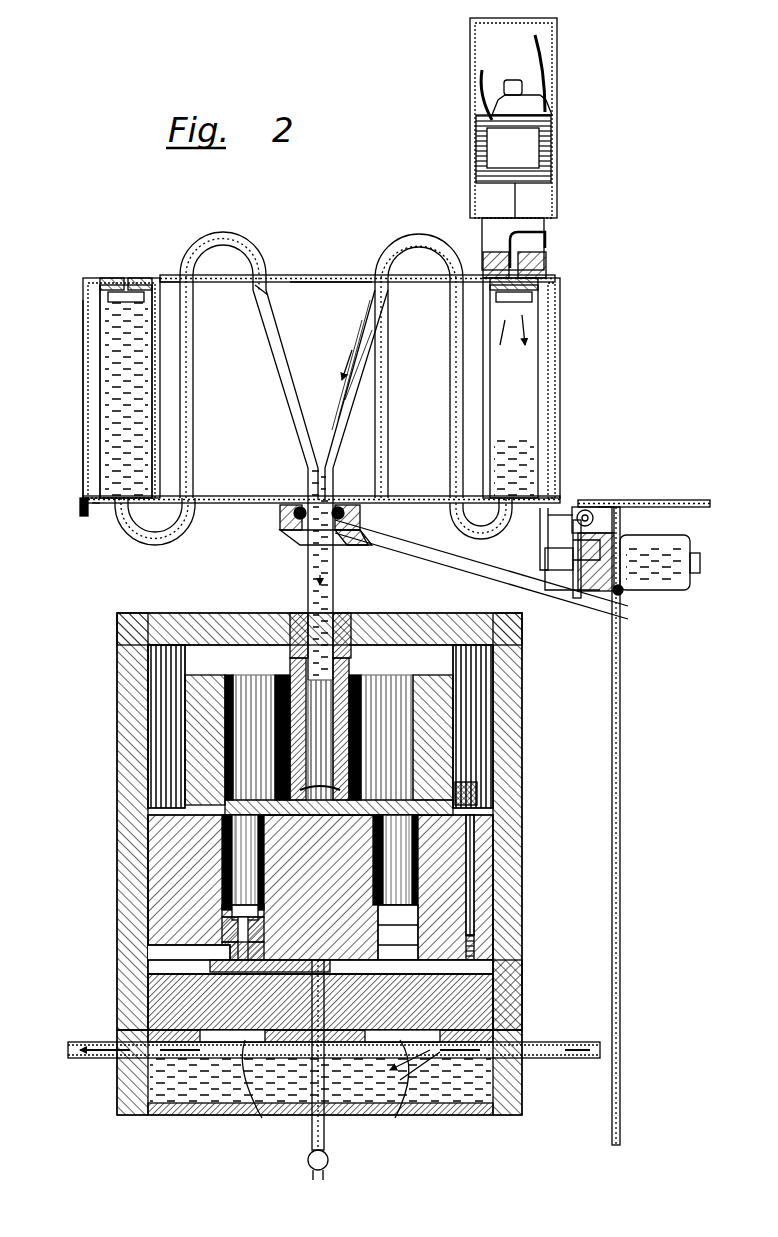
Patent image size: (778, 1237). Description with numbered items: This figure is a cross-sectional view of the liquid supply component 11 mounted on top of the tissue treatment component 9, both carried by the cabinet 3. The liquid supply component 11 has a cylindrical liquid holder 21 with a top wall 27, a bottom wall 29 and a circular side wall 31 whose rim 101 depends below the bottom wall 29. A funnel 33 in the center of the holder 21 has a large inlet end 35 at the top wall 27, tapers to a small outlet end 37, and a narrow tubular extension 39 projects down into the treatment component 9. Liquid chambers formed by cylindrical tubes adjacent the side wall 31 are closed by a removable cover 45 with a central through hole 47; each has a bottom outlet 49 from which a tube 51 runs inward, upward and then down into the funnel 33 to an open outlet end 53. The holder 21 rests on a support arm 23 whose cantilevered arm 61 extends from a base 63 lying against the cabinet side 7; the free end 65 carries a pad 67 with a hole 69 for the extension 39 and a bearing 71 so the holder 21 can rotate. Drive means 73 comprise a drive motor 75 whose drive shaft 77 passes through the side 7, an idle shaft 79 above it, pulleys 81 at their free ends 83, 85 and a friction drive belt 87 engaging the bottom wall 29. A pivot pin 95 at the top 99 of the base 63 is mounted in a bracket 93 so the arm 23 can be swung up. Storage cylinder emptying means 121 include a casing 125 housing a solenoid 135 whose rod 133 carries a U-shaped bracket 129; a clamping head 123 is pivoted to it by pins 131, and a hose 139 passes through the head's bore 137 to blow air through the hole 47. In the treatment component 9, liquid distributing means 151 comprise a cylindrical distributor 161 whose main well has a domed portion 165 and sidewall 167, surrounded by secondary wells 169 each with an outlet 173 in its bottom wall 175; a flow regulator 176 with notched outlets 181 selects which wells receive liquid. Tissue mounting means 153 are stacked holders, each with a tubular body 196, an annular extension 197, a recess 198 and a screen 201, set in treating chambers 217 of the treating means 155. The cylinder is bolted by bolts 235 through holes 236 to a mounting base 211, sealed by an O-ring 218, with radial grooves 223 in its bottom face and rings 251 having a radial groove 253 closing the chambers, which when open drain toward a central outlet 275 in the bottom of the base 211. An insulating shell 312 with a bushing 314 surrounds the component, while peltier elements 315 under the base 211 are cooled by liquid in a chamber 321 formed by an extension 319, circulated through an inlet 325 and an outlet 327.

The cabinet 3 is at (680, 500).
The side of the cabinet 7 is at (620, 760).
The tissue treatment component 9 is at (80, 683).
The liquid supply component 11 is at (70, 272).
The liquid holder 21 is at (84, 372).
The support arm 23 is at (468, 566).
The top wall 27 is at (170, 276).
The bottom wall 29 is at (97, 505).
The side wall 31 is at (85, 432).
The funnel 33 is at (283, 360).
The inlet end 35 is at (305, 290).
The outlet end 37 is at (340, 505).
The tubular extension 39 is at (308, 565).
The cover 45 is at (113, 277).
The through hole 47 is at (135, 277).
The bottom outlet 49 is at (118, 515).
The tube 51 is at (236, 233).
The outlet end 53 is at (266, 292).
The cantilevered arm 61 is at (562, 598).
The base 63 is at (620, 592).
The free end 65 is at (290, 532).
The pad 67 is at (280, 513).
The hole 69 is at (358, 528).
The bearing 71 is at (298, 505).
The drive means 73 is at (688, 541).
The drive motor 75 is at (692, 575).
The drive shaft 77 is at (545, 588).
The idle shaft 79 is at (582, 509).
The pulleys 81 is at (577, 543).
The free end 83 is at (545, 557).
The free end 85 is at (540, 530).
The friction drive belt 87 is at (550, 508).
The bracket 93 is at (598, 530).
The pivot pin 95 is at (594, 508).
The top of base 99 is at (600, 506).
The rim 101 is at (80, 509).
The storage cylinder emptying means 121 is at (578, 62).
The clamping head 123 is at (548, 256).
The casing 125 is at (562, 100).
The U-shaped bracket 129 is at (548, 240).
The pins 131 is at (550, 267).
The rod 133 is at (473, 190).
The solenoid 135 is at (473, 105).
The through bore 137 is at (550, 284).
The hose 139 is at (560, 210).
The liquid distributing means 151 is at (118, 660).
The tissue mounting means 153 is at (420, 916).
The treating means 155 is at (140, 882).
The cylindrical distributor 161 is at (160, 716).
The domed portion 165 is at (330, 790).
The cylindrical sidewall 167 is at (340, 665).
The secondary liquid distributing wells 169 is at (250, 690).
The outlet 173 is at (150, 800).
The bottom wall 175 is at (275, 655).
The flow regulator 176 is at (200, 745).
The outlets 181 is at (385, 775).
The tubular body 196 is at (264, 906).
The annular extension 197 is at (265, 932).
The cylindrical recess 198 is at (270, 893).
The mesh or screen 201 is at (240, 926).
The mounting base 211 is at (500, 1005).
The treating chambers 217 is at (230, 900).
The O-ring 218 is at (180, 952).
The radial grooves 223 is at (302, 968).
The bolts 235 is at (474, 848).
The holes 236 is at (476, 882).
The rings 251 is at (200, 968).
The radial groove 253 is at (250, 986).
The base 275 is at (330, 990).
The insulating shell 312 is at (524, 812).
The bushing 314 is at (296, 624).
The thermo-electric heating and/or cooling elements 315 is at (262, 1118).
The extension 319 is at (526, 1096).
The chamber 321 is at (320, 1080).
The inlet 325 is at (558, 1044).
The outlet 327 is at (105, 1060).